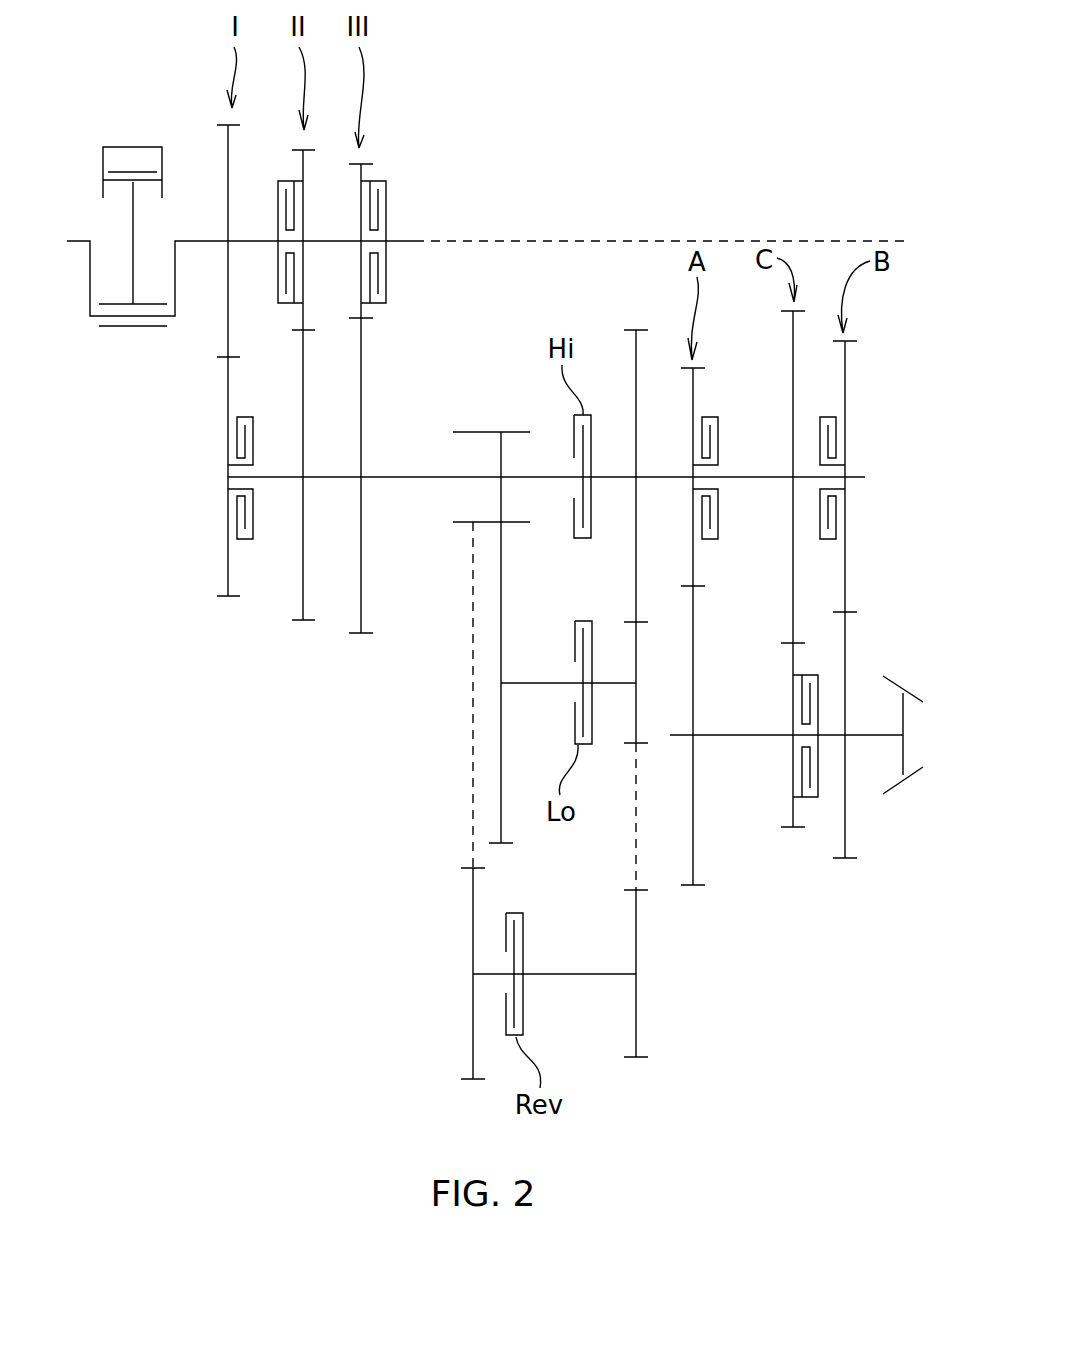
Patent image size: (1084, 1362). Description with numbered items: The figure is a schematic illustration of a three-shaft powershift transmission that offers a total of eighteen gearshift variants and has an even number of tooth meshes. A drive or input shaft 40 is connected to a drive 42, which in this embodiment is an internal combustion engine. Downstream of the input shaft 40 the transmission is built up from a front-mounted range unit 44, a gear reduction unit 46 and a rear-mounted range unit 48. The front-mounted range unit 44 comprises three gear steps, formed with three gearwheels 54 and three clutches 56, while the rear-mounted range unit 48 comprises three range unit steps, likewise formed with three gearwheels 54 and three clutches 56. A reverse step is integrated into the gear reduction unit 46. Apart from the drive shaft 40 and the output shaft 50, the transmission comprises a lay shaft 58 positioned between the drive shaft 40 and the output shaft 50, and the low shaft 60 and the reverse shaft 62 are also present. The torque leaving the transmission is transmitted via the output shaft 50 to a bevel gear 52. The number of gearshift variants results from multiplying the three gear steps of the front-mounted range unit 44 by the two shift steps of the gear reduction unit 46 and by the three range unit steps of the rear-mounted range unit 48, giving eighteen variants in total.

The drive shaft 40 is at (326, 245).
The drive 42 is at (80, 263).
The front-mounted range unit 44 is at (184, 404).
The gear reduction unit 46 is at (429, 683).
The rear-mounted range unit 48 is at (823, 867).
The output shaft 50 is at (755, 737).
The bevel gear 52 is at (905, 720).
The gearwheel 54 is at (228, 288).
The clutch 56 is at (283, 172).
The lay shaft 58 is at (660, 475).
The low shaft 60 is at (614, 683).
The reverse shaft 62 is at (595, 975).